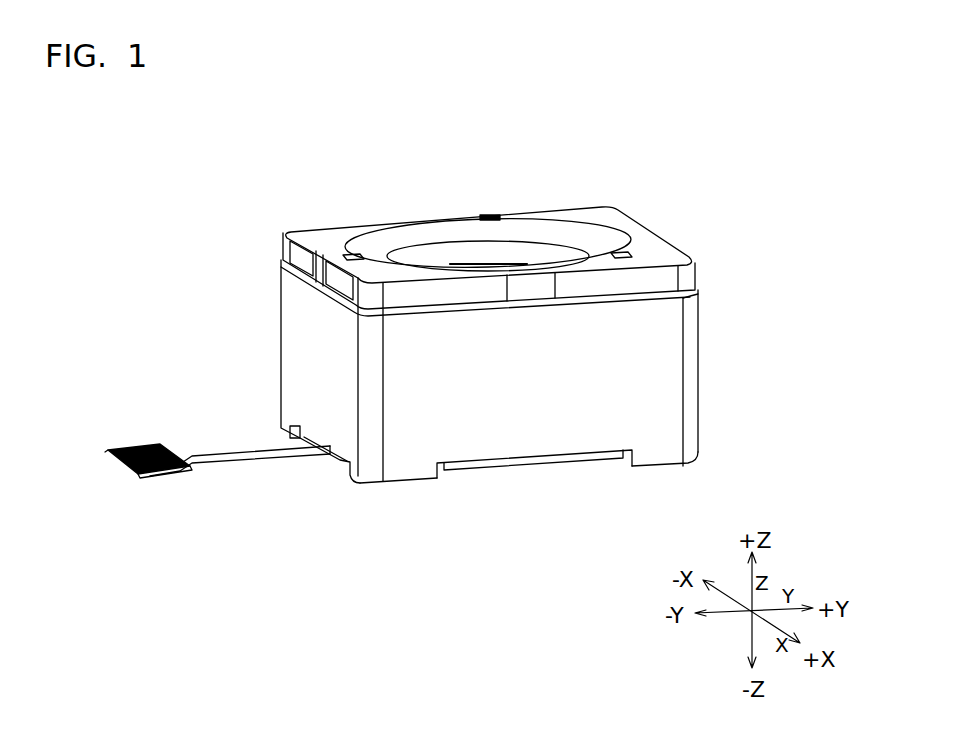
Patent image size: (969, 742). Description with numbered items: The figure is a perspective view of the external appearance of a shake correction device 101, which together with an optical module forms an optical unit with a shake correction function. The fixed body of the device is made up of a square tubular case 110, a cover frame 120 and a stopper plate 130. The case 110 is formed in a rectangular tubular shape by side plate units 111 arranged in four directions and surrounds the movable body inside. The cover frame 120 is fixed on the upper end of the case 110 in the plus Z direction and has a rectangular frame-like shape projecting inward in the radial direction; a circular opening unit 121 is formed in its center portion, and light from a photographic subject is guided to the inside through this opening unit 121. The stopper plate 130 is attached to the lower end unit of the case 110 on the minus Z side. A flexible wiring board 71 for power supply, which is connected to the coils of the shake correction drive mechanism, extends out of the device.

The shake correction device 101 is at (643, 200).
The case 110 is at (703, 348).
The side plate unit 111 is at (302, 358).
The cover frame 120 is at (328, 232).
The opening unit 121 is at (465, 250).
The stopper plate 130 is at (571, 464).
The flexible wiring board 71 is at (250, 457).